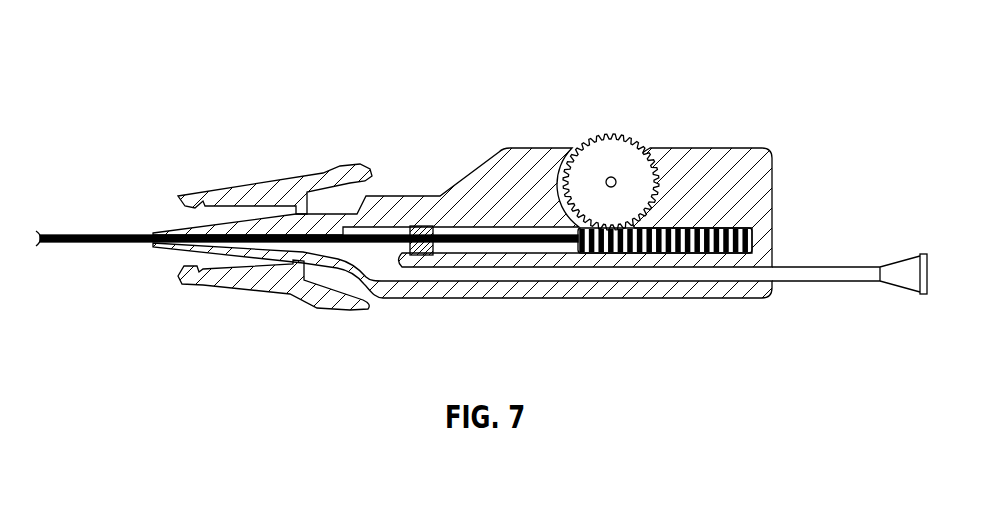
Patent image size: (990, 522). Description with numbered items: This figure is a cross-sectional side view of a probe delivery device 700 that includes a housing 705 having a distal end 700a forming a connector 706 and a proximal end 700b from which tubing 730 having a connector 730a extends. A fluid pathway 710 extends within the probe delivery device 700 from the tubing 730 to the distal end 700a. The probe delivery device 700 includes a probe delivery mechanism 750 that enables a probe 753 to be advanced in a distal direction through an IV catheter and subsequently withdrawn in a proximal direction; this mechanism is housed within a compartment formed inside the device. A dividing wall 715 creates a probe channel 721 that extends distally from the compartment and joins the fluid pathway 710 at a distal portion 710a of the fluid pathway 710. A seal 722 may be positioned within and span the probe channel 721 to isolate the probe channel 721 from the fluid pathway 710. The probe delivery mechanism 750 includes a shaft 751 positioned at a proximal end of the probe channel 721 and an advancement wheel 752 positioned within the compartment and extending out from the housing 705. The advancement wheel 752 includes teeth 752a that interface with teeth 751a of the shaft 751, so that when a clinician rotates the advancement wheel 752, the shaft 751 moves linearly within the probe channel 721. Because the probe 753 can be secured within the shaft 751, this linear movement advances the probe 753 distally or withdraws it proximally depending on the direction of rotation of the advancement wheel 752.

The probe delivery device 700 is at (869, 38).
The distal end 700a is at (191, 298).
The proximal end 700b is at (747, 315).
The housing 705 is at (702, 298).
The connector 706 is at (262, 171).
The fluid pathway 710 is at (584, 270).
The distal portion 710a is at (388, 255).
The dividing wall 715 is at (460, 267).
The probe channel 721 is at (457, 226).
The seal 722 is at (423, 226).
The tubing 730 is at (858, 271).
The connector 730a is at (922, 242).
The probe delivery mechanism 750 is at (773, 97).
The shaft 751 is at (721, 221).
The teeth 751a is at (771, 225).
The advancement wheel 752 is at (582, 137).
The teeth 752a is at (634, 137).
The probe 753 is at (104, 231).